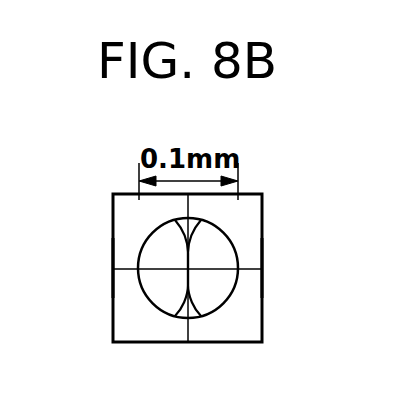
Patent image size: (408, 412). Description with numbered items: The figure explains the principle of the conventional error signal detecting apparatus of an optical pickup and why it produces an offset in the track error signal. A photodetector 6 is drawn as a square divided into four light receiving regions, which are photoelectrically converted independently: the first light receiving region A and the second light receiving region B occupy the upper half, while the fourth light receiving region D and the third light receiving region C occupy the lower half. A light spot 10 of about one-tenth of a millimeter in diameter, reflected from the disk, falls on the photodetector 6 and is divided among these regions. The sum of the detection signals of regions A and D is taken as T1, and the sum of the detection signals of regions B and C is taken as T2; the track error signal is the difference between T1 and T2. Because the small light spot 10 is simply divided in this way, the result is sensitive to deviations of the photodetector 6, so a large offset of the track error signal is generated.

The photodetector 6 is at (262, 205).
The light spot 10 is at (208, 313).
The first light receiving region A is at (150, 231).
The second light receiving region B is at (225, 231).
The third light receiving region C is at (225, 306).
The fourth light receiving region D is at (150, 306).
The sum of detection signals of first and fourth light receiving regions T1 is at (92, 238).
The sum of detection signals of second and third light receiving regions T2 is at (283, 238).